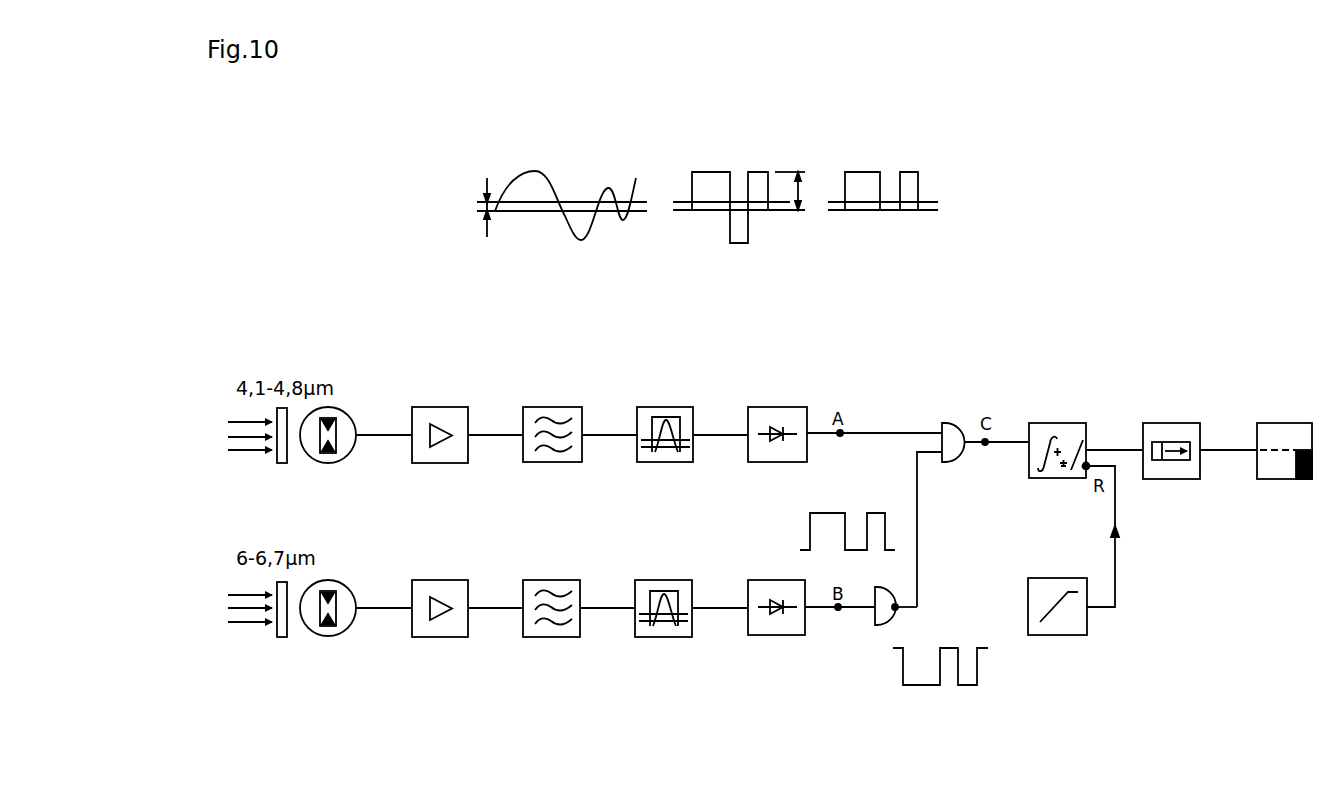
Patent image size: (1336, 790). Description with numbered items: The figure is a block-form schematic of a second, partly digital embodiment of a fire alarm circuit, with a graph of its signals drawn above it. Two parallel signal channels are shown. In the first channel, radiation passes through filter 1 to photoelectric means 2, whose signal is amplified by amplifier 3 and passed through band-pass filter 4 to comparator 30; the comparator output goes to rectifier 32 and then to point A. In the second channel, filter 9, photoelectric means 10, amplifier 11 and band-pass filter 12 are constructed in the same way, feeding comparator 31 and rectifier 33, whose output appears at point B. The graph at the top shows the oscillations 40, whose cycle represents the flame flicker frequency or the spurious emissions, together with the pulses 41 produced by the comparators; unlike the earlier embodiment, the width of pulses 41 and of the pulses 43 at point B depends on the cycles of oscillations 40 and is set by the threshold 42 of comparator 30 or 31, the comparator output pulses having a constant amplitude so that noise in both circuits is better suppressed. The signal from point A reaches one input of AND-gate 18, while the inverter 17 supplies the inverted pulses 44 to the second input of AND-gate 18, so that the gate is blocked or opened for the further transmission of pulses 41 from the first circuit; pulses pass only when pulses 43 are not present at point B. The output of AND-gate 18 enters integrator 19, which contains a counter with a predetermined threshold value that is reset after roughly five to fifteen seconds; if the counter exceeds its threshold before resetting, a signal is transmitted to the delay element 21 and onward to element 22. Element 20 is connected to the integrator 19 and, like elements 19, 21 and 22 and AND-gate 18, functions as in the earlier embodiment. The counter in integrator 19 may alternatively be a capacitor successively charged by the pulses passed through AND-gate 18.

The filter 1 is at (283, 449).
The photoelectric means 2 is at (328, 449).
The amplifier 3 is at (440, 449).
The band-pass filter 4 is at (552, 449).
The comparator 30 is at (665, 449).
The rectifier 32 is at (777, 449).
The AND-gate 18 is at (952, 457).
The integrator 19 is at (1057, 465).
The delay element 21 is at (1171, 465).
The alarm element 22 is at (1284, 465).
The filter 9 is at (283, 623).
The photoelectric means 10 is at (328, 622).
The amplifier 11 is at (440, 622).
The band-pass filter 12 is at (551, 622).
The comparator 31 is at (663, 622).
The rectifier 33 is at (776, 622).
The inverter 17 is at (895, 614).
The threshold element 20 is at (1057, 594).
The oscillations 40 is at (531, 171).
The pulses 41 is at (700, 168).
The threshold 42 is at (485, 203).
The pulses 43 is at (823, 508).
The inverted pulses 44 is at (915, 687).